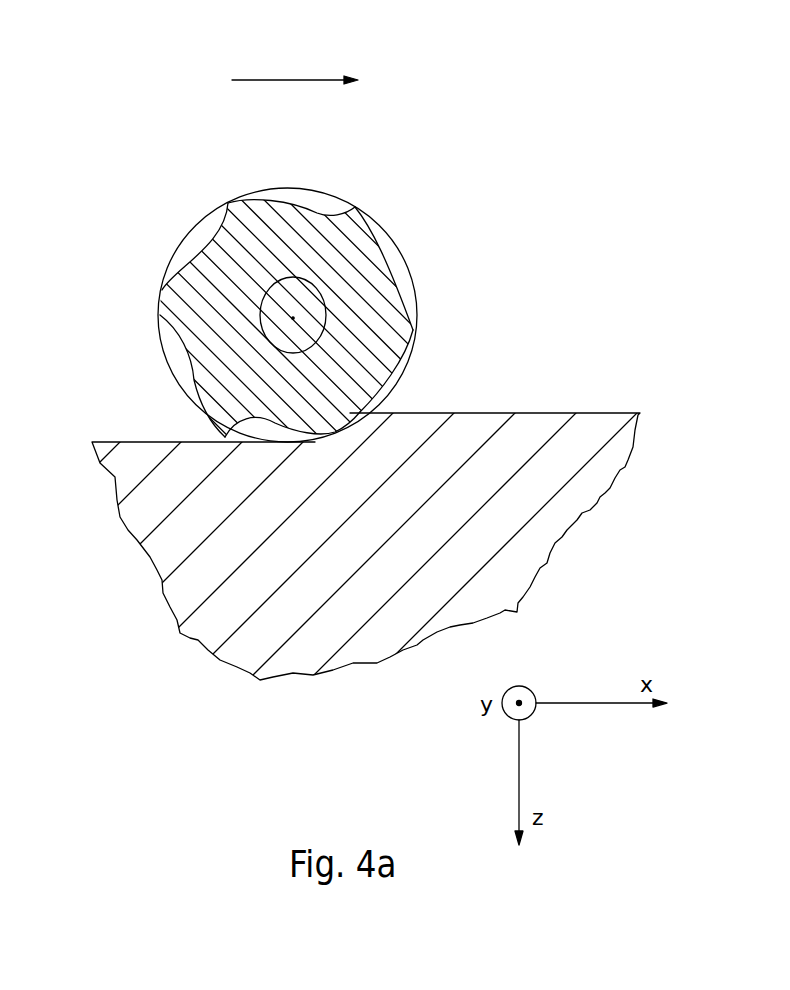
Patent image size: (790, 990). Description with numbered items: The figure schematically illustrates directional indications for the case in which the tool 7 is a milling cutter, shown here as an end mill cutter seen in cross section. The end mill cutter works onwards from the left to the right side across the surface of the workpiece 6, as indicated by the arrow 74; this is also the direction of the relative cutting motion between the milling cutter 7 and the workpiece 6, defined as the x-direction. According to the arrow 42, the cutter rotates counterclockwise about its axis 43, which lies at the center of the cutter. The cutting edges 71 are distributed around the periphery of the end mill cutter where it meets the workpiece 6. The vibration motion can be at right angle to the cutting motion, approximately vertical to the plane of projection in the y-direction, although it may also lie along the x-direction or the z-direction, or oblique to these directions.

The arrow 74 is at (277, 46).
The tool 7 is at (277, 220).
The cutting edges 71 is at (228, 205).
The arrow 42 is at (432, 260).
The axis 43 is at (294, 318).
The workpiece 6 is at (410, 688).